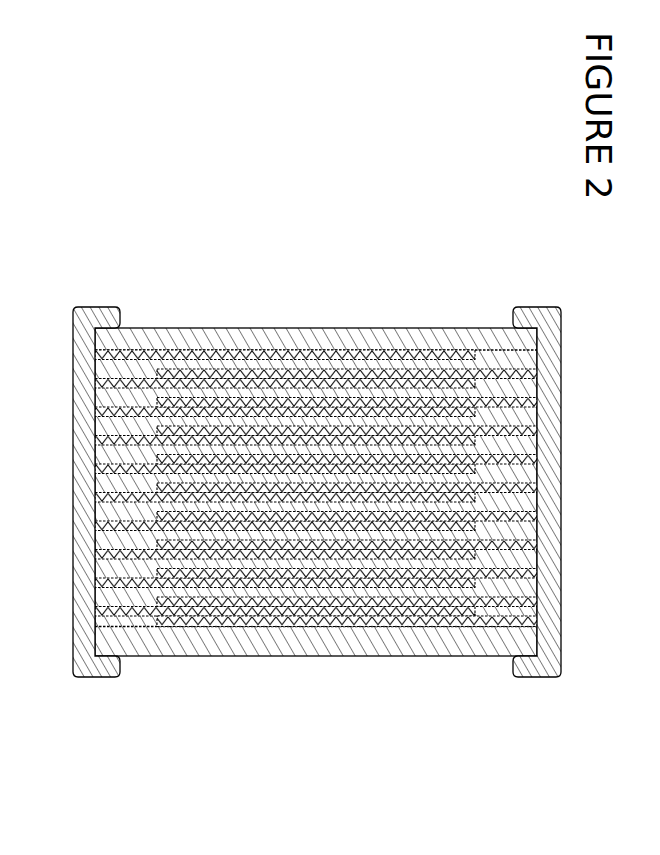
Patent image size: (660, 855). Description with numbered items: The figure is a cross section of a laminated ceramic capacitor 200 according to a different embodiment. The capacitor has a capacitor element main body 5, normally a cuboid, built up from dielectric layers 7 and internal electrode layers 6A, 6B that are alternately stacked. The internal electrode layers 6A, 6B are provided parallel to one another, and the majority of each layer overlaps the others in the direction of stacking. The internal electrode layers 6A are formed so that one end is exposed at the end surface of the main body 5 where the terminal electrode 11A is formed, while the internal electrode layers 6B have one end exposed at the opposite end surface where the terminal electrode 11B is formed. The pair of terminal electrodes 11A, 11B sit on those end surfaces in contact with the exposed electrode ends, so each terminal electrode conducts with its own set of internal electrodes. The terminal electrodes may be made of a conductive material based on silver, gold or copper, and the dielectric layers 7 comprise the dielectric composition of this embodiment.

The laminated ceramic capacitor 200 is at (317, 515).
The capacitor element main body 5 is at (438, 657).
The internal electrode layers 6A is at (360, 327).
The internal electrode layers 6B is at (332, 657).
The dielectric layers 7 is at (245, 327).
The terminal electrode 11A is at (87, 678).
The terminal electrode 11B is at (538, 307).